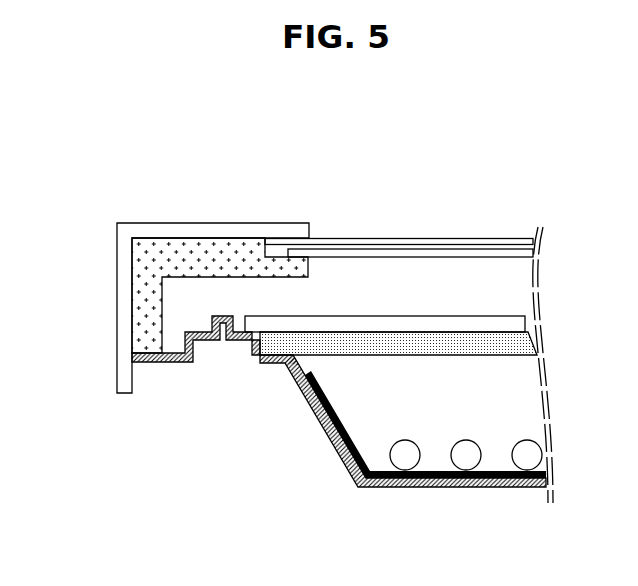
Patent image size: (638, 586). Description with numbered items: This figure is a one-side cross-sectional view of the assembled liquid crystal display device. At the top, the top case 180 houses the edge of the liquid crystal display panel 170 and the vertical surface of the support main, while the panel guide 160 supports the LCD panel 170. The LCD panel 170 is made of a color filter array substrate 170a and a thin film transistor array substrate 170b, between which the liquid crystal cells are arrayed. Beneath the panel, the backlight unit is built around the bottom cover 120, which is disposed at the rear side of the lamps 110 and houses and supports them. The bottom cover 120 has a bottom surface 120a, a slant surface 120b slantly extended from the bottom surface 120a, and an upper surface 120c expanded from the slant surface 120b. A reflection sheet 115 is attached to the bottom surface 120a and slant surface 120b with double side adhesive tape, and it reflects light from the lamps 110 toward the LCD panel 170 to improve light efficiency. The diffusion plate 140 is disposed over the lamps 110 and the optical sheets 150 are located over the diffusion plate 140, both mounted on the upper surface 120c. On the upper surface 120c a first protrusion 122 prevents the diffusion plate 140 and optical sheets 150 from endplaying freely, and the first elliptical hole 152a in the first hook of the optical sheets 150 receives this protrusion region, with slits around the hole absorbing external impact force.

The top case 180 is at (144, 230).
The panel guide 160 is at (137, 257).
The liquid crystal display panel 170 is at (399, 202).
The color filter array substrate 170a is at (392, 250).
The thin film transistor array substrate 170b is at (455, 242).
The first elliptical hole 152a is at (207, 302).
The first protrusion 122 is at (218, 317).
The bottom cover 120 is at (339, 424).
The bottom surface 120a is at (452, 518).
The slant surface 120b is at (333, 445).
The upper surface 120c is at (163, 362).
The reflection sheet 115 is at (493, 487).
The optical sheets 150 is at (522, 323).
The diffusion plate 140 is at (525, 347).
The lamp 110 is at (532, 452).